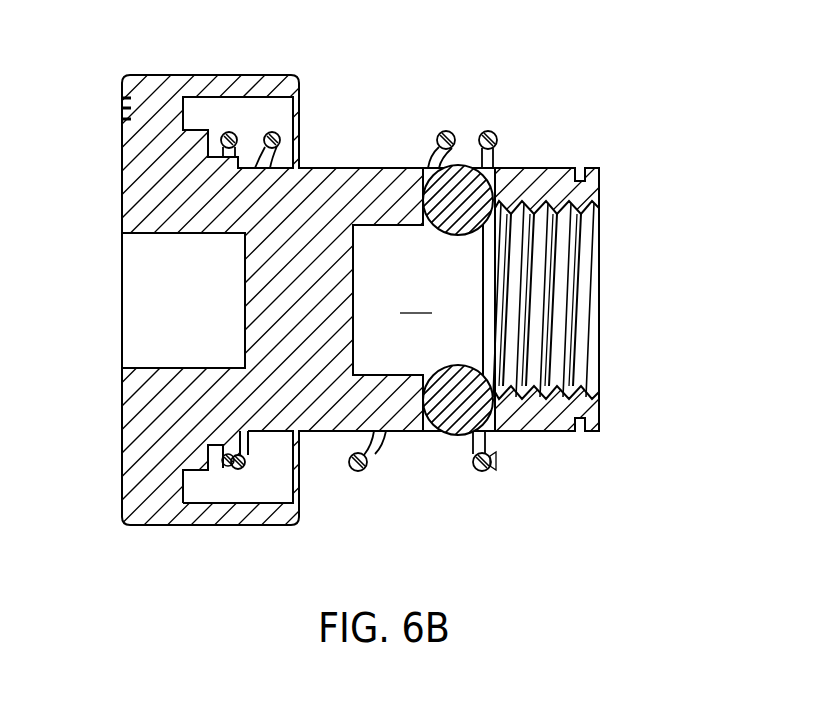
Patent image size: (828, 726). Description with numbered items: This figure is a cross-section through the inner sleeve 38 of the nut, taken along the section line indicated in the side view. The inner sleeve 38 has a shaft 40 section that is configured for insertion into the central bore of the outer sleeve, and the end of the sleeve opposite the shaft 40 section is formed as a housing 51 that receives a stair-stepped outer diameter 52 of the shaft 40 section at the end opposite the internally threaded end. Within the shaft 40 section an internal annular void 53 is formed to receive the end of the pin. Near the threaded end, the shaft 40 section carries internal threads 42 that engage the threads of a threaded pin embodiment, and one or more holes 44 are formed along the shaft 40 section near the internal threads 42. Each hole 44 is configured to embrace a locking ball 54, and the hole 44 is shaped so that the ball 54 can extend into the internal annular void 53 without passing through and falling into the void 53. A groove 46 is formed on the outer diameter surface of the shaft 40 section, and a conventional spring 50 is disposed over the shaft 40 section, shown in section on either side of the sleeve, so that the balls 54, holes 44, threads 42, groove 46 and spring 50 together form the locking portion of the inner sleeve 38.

The inner sleeve 38 is at (122, 183).
The shaft section 40 is at (553, 432).
The internal threads 42 is at (577, 282).
The holes 44 is at (427, 432).
The groove 46 is at (580, 168).
The spring 50 is at (428, 152).
The housing 51 is at (273, 82).
The stair-stepped outer diameter 52 is at (198, 130).
The internal annular void 53 is at (424, 299).
The locking ball 54 is at (457, 180).